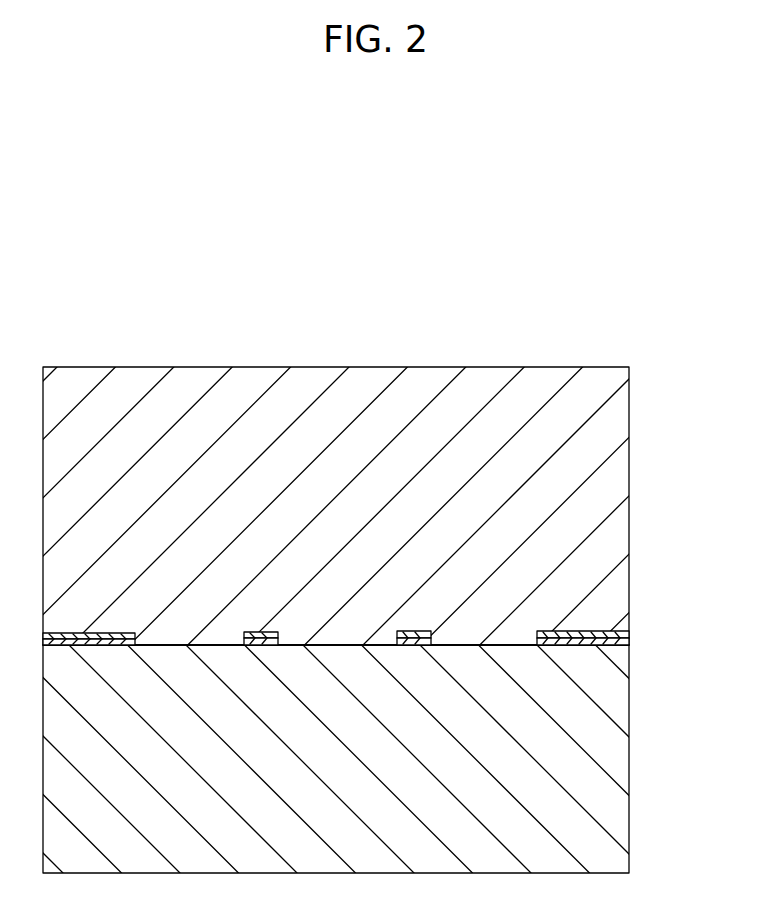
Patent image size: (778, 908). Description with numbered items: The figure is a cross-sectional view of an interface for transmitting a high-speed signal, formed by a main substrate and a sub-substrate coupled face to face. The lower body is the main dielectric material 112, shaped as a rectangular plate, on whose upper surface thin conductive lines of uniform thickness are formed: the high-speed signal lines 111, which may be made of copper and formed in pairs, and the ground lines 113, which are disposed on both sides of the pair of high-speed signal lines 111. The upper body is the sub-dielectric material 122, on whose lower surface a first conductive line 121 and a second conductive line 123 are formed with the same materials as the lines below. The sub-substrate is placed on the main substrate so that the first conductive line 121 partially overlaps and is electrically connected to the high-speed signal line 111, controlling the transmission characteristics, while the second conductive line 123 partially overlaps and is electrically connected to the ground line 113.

The high-speed signal line 111 is at (418, 646).
The main dielectric material 112 is at (613, 797).
The ground line 113 is at (593, 645).
The first conductive line 121 is at (420, 630).
The sub-dielectric material 122 is at (612, 477).
The second conductive line 123 is at (597, 629).